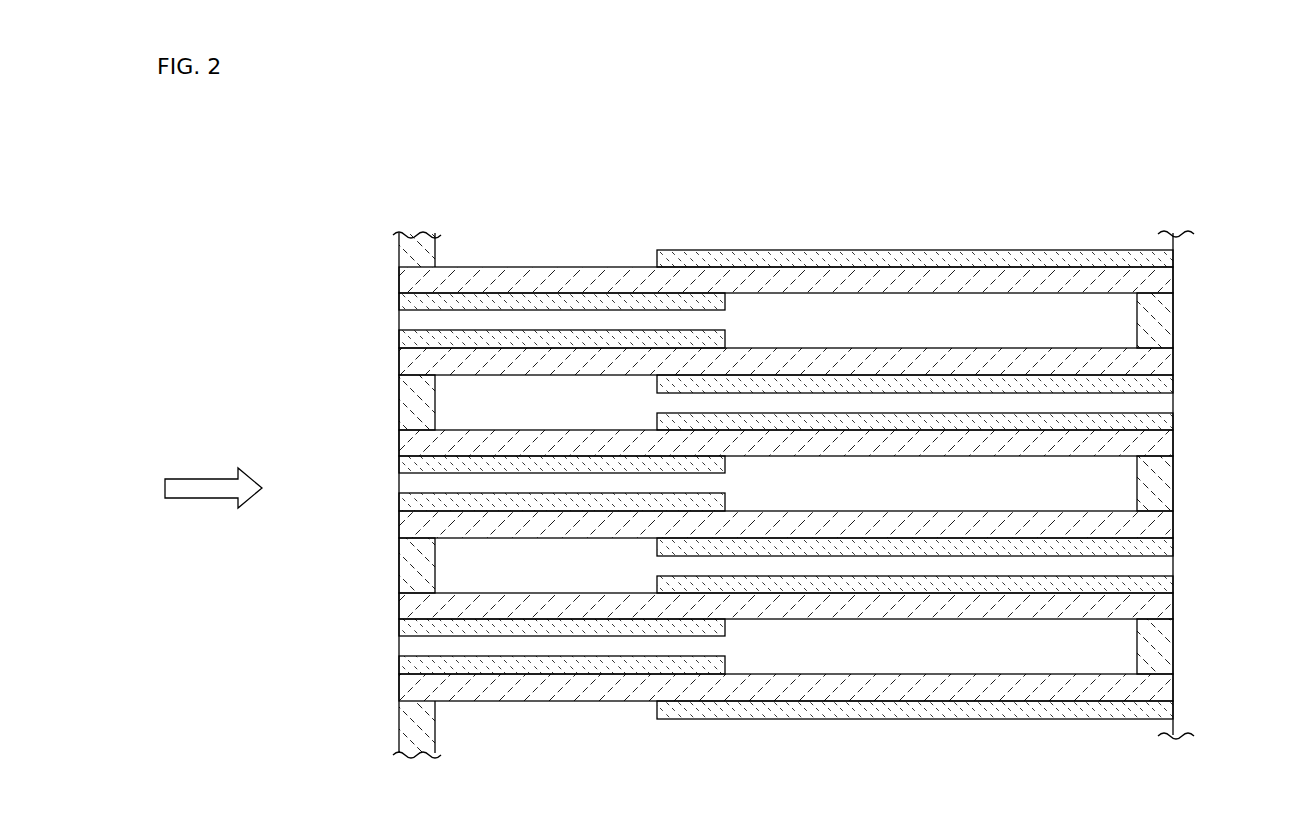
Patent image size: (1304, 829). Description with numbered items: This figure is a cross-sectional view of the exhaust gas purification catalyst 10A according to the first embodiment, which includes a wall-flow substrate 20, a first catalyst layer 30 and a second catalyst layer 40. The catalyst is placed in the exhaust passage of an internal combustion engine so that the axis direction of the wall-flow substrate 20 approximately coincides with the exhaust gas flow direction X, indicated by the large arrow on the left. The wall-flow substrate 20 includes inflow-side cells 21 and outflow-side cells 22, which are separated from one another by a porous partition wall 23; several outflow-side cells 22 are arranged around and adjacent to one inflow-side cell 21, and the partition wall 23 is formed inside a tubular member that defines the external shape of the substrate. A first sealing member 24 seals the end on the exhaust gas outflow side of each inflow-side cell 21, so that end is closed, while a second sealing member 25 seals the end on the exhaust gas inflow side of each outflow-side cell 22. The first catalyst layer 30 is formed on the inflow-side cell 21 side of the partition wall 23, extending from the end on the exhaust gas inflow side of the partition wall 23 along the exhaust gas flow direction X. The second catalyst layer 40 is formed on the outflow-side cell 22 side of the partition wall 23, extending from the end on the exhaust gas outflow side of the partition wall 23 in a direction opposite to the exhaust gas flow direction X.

The exhaust gas purification catalyst 10A is at (1195, 146).
The wall-flow substrate 20 is at (1199, 268).
The inflow-side cell 21 is at (906, 339).
The outflow-side cell 22 is at (599, 236).
The porous partition wall 23 is at (410, 281).
The first sealing member 24 is at (1162, 319).
The second sealing member 25 is at (410, 253).
The first catalyst layer 30 is at (408, 337).
The second catalyst layer 40 is at (943, 250).
The exhaust gas flow direction X is at (204, 484).